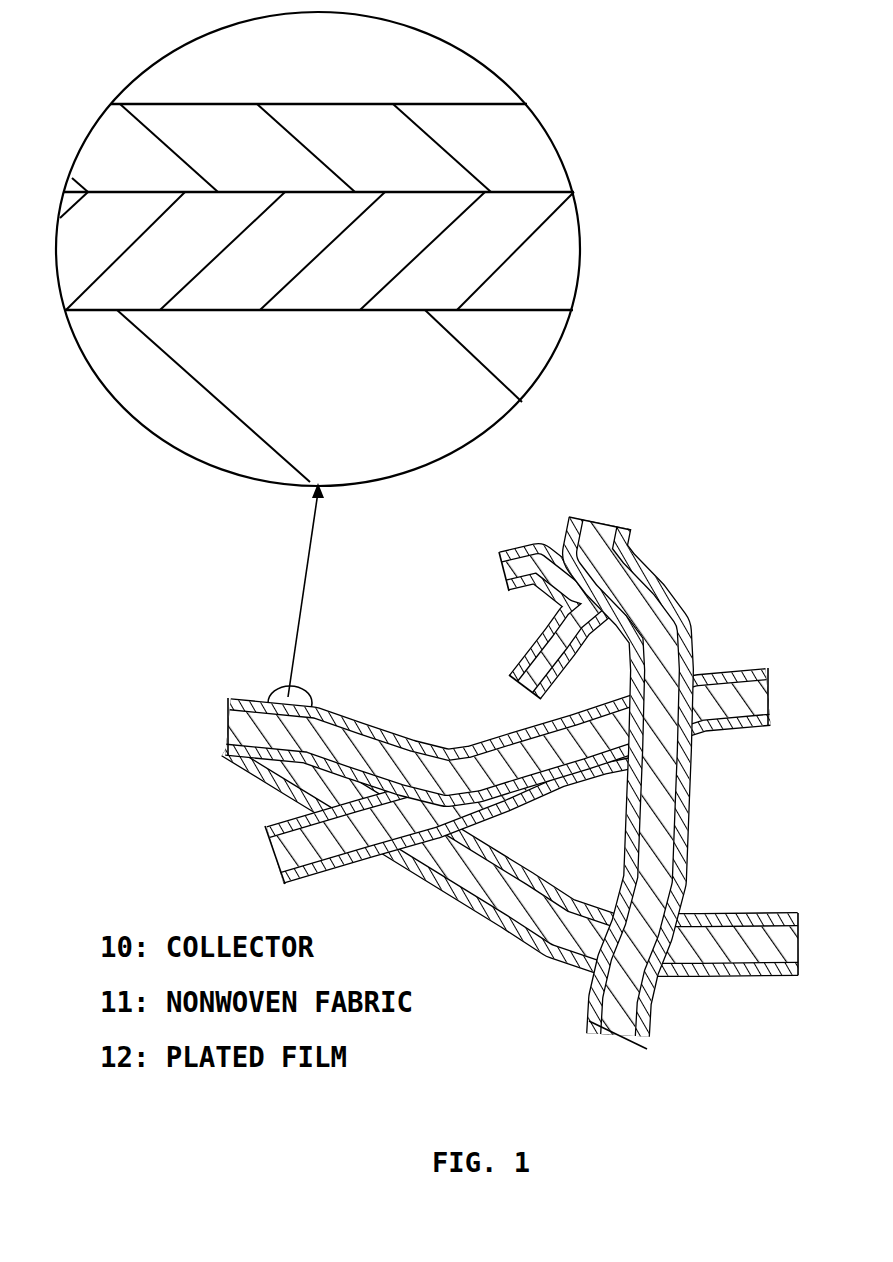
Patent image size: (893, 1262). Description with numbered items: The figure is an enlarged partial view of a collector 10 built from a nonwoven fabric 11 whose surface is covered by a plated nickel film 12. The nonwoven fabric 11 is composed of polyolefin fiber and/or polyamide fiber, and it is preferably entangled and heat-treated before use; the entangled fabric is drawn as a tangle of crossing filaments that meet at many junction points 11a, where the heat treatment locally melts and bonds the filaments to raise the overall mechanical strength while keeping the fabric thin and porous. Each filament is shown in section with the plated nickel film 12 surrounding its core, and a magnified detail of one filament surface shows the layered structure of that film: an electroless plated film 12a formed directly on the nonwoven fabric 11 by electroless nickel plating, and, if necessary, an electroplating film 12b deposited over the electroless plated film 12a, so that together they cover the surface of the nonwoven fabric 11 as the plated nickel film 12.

The collector 10 is at (92, 572).
The nonwoven fabric 11 is at (525, 362).
The junction points 11a is at (606, 588).
The plated nickel film 12 is at (684, 150).
The electroless plated film 12a is at (572, 227).
The electroplating film 12b is at (542, 151).